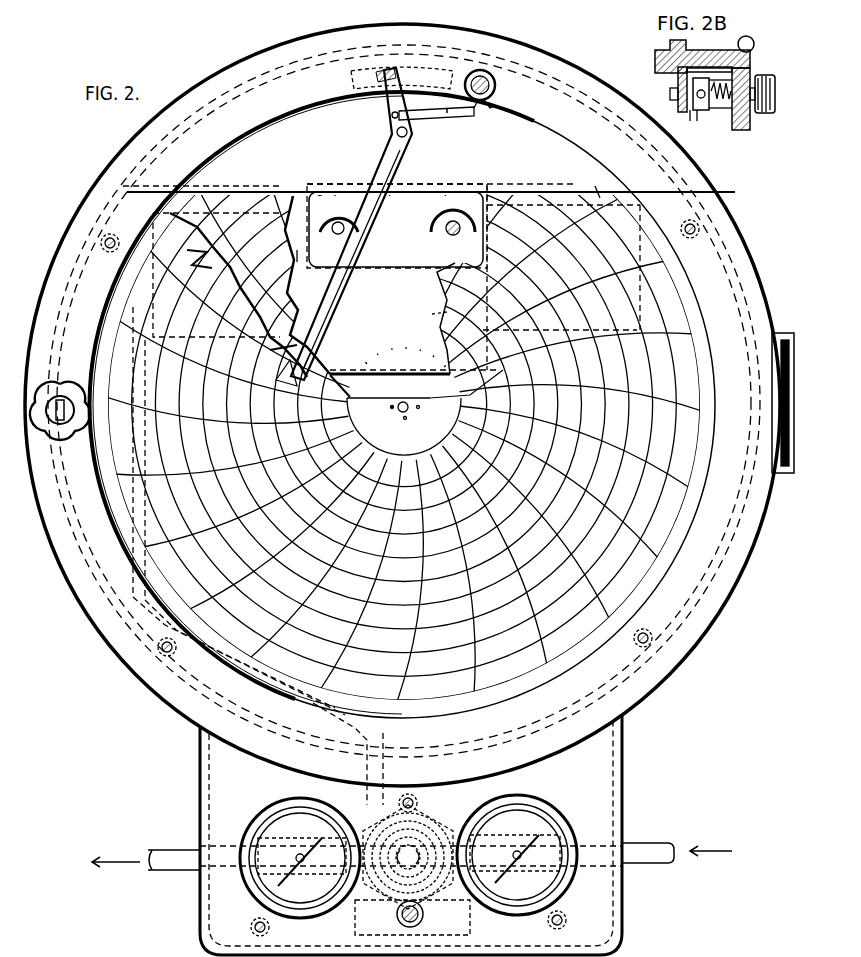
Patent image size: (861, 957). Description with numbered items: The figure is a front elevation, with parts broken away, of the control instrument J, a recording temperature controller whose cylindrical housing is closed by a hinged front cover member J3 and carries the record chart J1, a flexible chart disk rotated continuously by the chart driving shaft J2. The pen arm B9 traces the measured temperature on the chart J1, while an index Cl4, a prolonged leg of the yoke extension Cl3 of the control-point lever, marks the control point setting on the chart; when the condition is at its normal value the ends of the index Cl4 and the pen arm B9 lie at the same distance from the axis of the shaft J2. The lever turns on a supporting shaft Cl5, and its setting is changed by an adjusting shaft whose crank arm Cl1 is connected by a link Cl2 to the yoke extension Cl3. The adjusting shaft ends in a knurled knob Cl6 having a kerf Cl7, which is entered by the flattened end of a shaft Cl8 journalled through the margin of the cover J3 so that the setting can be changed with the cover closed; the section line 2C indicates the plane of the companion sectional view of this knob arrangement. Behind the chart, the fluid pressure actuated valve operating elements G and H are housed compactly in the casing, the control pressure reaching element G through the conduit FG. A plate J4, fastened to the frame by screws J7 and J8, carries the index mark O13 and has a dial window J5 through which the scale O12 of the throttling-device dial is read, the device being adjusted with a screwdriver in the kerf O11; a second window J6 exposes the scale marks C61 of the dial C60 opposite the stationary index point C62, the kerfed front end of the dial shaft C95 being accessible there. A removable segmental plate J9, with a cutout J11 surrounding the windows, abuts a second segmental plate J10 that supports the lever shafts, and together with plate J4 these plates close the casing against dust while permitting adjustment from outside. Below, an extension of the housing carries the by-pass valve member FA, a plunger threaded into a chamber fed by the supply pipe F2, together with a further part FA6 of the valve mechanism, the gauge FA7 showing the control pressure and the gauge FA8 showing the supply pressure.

In FIG. 2, the control instrument J is at (42, 520).
In FIG. 2, the record chart J1 is at (404, 404).
In FIG. 2, the chart driving shaft J2 is at (410, 410).
In FIG. 2, the front cover member J3 is at (742, 265).
In FIG. 2, the plate J4 is at (462, 279).
In FIG. 2, the dial window J5 is at (316, 198).
In FIG. 2B, the dial window J5 is at (750, 48).
In FIG. 2, the dial window opening J6 is at (425, 220).
In FIG. 2, the screw J7 is at (300, 287).
In FIG. 2, the screw J8 is at (429, 315).
In FIG. 2, the removable segmental plate J9 is at (718, 192).
In FIG. 2, the segmental plate J10 is at (546, 146).
In FIG. 2, the cutout J11 is at (478, 194).
In FIG. 2, the valve operating element H is at (598, 190).
In FIG. 2, the valve operating element G is at (297, 257).
In FIG. 2, the pen arm B9 is at (330, 300).
In FIG. 2, the crank arm Cl1 is at (489, 108).
In FIG. 2B, the crank arm Cl1 is at (678, 107).
In FIG. 2, the link Cl2 is at (459, 129).
In FIG. 2, the yoke extension Cl3 is at (390, 102).
In FIG. 2, the index Cl4 is at (320, 318).
In FIG. 2B, the supporting shaft Cl5 is at (697, 115).
In FIG. 2B, the knurled head Cl6 is at (728, 122).
In FIG. 2B, the kerf Cl7 is at (693, 125).
In FIG. 2, the shaft Cl8 is at (495, 82).
In FIG. 2, the section line 2C is at (487, 21).
In FIG. 2, the kerf O11 is at (320, 240).
In FIG. 2, the scale O12 is at (350, 206).
In FIG. 2, the index mark O13 is at (343, 205).
In FIG. 2, the dial C60 is at (478, 232).
In FIG. 2, the scale marks C61 is at (445, 230).
In FIG. 2, the stationary index point C62 is at (456, 208).
In FIG. 2, the shaft C95 is at (428, 257).
In FIG. 2, the conduit FG is at (380, 738).
In FIG. 2, the valve member FA is at (388, 940).
In FIG. 2, the manual control FA6 is at (440, 910).
In FIG. 2, the pressure gauge FA7 is at (258, 885).
In FIG. 2, the pressure gauge FA8 is at (556, 818).
In FIG. 2, the supply pipe F2 is at (647, 846).